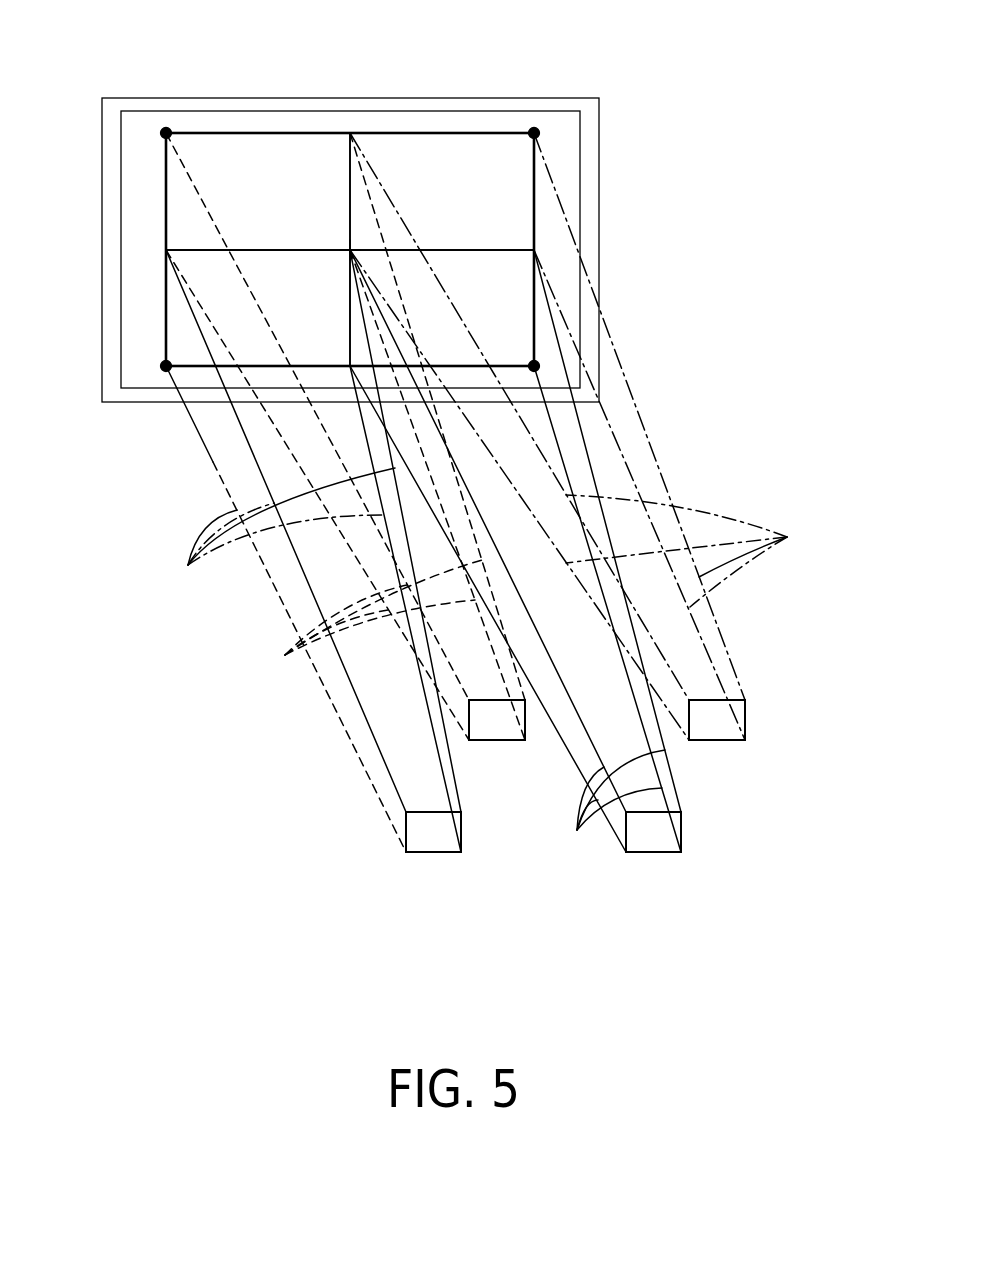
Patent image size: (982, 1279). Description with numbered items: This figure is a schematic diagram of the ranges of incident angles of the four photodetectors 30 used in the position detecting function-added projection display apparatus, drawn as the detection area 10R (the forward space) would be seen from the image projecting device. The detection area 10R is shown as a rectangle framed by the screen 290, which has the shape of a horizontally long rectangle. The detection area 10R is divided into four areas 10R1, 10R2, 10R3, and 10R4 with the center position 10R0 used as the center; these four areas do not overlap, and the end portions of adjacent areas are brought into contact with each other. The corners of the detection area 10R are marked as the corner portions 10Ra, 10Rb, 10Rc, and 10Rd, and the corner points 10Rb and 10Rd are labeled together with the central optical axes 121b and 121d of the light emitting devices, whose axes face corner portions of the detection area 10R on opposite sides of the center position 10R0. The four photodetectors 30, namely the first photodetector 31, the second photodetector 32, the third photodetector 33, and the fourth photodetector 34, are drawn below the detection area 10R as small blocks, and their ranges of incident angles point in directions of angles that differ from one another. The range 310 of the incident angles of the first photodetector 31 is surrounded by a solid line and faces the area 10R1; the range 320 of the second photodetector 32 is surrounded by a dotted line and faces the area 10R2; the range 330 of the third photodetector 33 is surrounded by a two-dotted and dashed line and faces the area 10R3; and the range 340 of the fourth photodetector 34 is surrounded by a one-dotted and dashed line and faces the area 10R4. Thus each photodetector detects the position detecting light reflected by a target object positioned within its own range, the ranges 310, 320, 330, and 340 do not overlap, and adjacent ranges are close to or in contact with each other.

The detection area 10R is at (540, 193).
The screen 290 is at (572, 202).
The center position 10R0 is at (350, 250).
The area 10R1 is at (518, 293).
The area 10R2 is at (275, 180).
The area 10R3 is at (340, 293).
The area 10R4 is at (512, 180).
The corner portion 10Ra is at (534, 366).
The corner portion 10Rb is at (241, 83).
The corner portion 10Rc is at (166, 366).
The corner point d of reference region 10Rd is at (547, 83).
The central optical axis 121b is at (166, 133).
The central optical axis 121d is at (534, 133).
The photodetector 30 is at (489, 533).
The first photodetector 31 is at (654, 852).
The second photodetector 32 is at (495, 740).
The third photodetector 33 is at (433, 852).
The fourth photodetector 34 is at (713, 740).
The range of incident angles 310 is at (610, 809).
The range of incident angles 320 is at (361, 631).
The range of incident angles 330 is at (266, 534).
The range of incident angles 340 is at (707, 551).